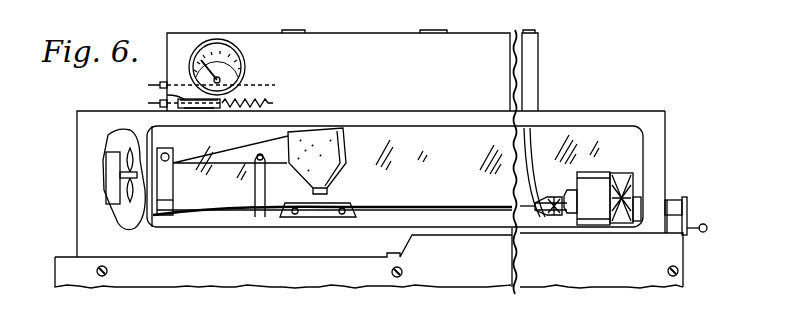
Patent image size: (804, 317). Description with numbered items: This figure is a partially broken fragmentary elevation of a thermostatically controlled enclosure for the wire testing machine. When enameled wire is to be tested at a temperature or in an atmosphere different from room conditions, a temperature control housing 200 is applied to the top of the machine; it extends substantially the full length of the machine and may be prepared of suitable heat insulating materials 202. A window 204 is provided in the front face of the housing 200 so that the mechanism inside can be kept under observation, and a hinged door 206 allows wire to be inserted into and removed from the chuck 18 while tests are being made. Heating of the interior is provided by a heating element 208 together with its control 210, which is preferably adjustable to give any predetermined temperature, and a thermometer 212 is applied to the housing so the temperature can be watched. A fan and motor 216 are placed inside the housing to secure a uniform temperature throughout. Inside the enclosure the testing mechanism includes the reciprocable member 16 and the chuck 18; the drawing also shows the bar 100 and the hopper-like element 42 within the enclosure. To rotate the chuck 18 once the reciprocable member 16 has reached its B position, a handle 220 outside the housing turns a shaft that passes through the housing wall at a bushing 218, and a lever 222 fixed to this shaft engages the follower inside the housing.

The temperature control housing 200 is at (580, 104).
The heat insulating materials 202 is at (648, 104).
The window 204 is at (635, 142).
The hinged door 206 is at (537, 54).
The heating element 208 is at (273, 85).
The control 210 is at (158, 92).
The thermometer 212 is at (218, 40).
The fan and motor 216 is at (115, 165).
The bar 100 is at (228, 216).
The hopper 42 is at (326, 195).
The reciprocable member 16 is at (602, 215).
The chuck 18 is at (553, 218).
The bushing 218 is at (667, 200).
The handle 220 is at (689, 218).
The lever 222 is at (640, 222).